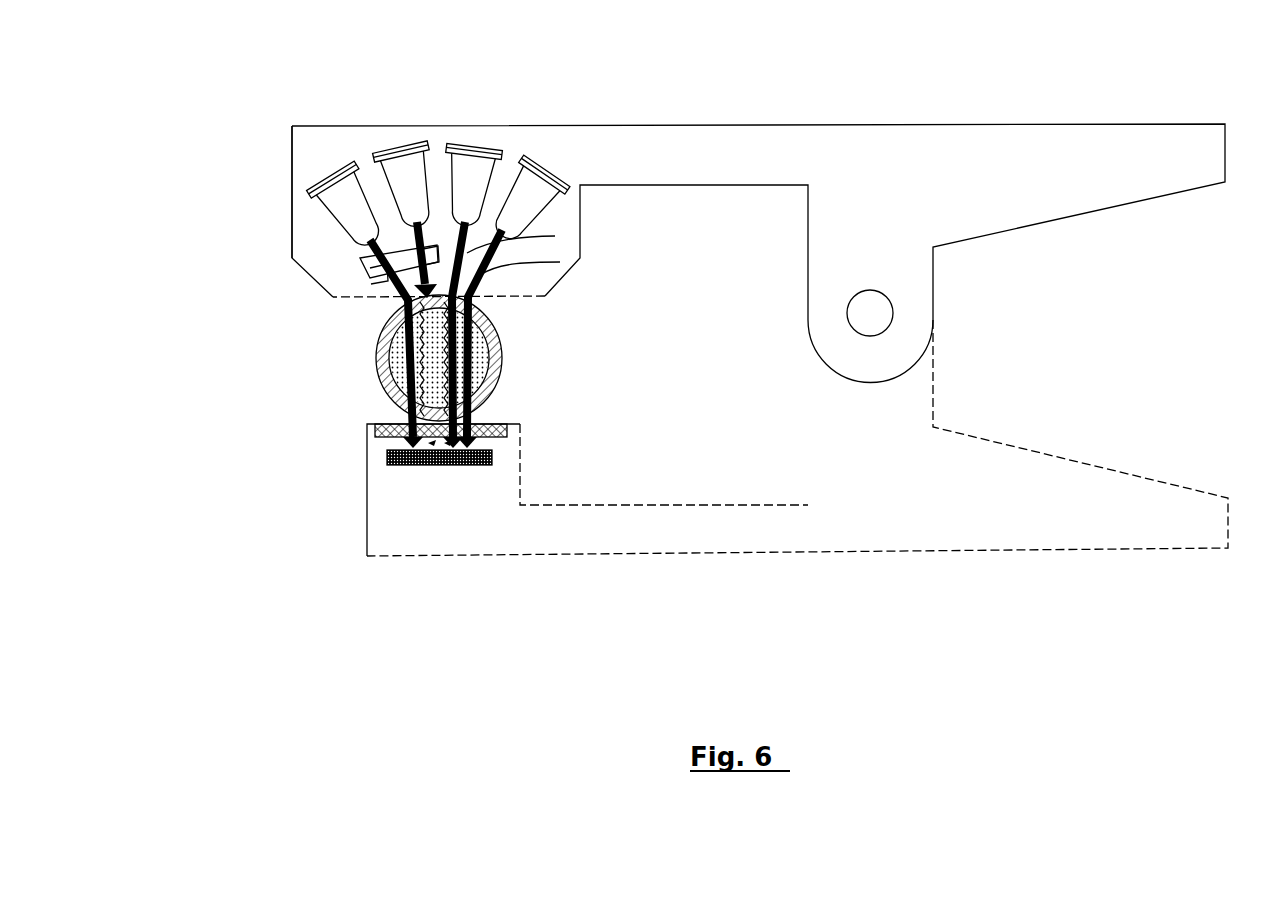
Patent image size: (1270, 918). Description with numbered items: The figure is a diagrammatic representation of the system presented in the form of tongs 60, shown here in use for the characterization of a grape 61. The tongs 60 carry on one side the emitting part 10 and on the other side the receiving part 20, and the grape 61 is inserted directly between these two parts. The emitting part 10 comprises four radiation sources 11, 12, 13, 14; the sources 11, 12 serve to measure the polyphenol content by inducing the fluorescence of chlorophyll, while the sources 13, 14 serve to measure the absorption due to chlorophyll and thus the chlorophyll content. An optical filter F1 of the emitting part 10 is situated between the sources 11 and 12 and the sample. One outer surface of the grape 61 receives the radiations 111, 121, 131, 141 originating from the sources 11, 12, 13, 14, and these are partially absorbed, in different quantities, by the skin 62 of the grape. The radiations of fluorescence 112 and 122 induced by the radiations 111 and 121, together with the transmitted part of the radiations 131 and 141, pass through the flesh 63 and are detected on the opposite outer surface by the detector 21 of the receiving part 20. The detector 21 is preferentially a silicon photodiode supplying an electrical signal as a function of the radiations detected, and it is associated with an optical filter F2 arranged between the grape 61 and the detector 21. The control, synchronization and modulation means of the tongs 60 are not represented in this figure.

The emitting part 10 is at (292, 168).
The radiation source 11 is at (330, 214).
The radiation source 12 is at (382, 174).
The radiation source 13 is at (453, 160).
The radiation source 14 is at (524, 183).
The radiation 111 is at (370, 275).
The radiation of fluorescence 112 is at (379, 356).
The radiation 121 is at (362, 258).
The radiation of fluorescence 122 is at (382, 396).
The radiation 131 is at (560, 262).
The radiation 141 is at (555, 236).
The receiving part 20 is at (367, 537).
The detector 21 is at (397, 466).
The tongs 60 is at (770, 125).
The grape 61 is at (512, 353).
The skin 62 is at (503, 383).
The flesh 63 is at (495, 400).
The optical filter F1 is at (372, 302).
The optical filter F2 is at (386, 440).